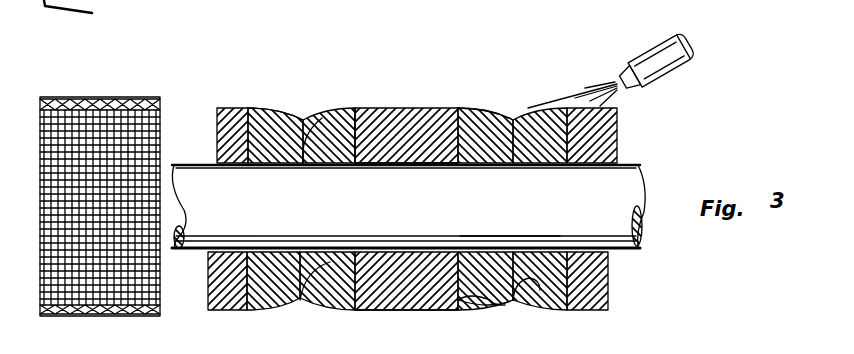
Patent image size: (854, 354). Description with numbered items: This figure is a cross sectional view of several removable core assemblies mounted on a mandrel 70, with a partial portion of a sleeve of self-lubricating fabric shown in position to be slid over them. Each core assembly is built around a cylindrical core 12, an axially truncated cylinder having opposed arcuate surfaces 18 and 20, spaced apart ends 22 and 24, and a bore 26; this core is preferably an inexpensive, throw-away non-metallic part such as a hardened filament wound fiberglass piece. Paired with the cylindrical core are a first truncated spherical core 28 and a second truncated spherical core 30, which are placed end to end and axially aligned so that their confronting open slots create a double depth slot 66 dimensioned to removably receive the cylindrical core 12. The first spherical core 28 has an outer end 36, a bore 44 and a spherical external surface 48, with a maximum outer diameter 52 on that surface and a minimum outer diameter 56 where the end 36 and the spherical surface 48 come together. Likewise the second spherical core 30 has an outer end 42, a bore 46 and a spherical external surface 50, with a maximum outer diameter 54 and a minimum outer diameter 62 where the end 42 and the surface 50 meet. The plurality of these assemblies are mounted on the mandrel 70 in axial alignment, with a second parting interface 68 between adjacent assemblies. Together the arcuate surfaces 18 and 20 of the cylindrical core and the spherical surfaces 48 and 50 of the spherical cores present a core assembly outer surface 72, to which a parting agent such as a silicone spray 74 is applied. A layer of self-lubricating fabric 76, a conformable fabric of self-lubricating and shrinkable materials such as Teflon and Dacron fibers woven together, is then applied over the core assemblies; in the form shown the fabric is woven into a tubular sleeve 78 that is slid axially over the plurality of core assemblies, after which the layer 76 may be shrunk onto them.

The cylindrical core 12 is at (395, 312).
The arcuate surface 18 is at (414, 108).
The arcuate surface 20 is at (432, 310).
The end 22 is at (330, 310).
The end 24 is at (493, 310).
The bore 26 is at (440, 165).
The first truncated spherical core 28 is at (325, 110).
The second truncated spherical core 30 is at (497, 110).
The end 36 is at (278, 165).
The end 42 is at (525, 310).
The bore 44 is at (348, 165).
The bore 46 is at (496, 250).
The spherical external surface 48 is at (343, 110).
The spherical external surface 50 is at (560, 310).
The maximum outer diameter 52 is at (358, 110).
The maximum outer diameter 54 is at (460, 110).
The minimum outer diameter 56 is at (297, 302).
The minimum outer diameter 62 is at (522, 110).
The double depth slot 66 is at (448, 165).
The second parting interface 68 is at (302, 250).
The mandrel 70 is at (598, 232).
The core assembly outer surface 72 is at (415, 312).
The silicone spray 74 is at (618, 75).
The self-lubricating fabric 76 is at (145, 97).
The tubular sleeve 78 is at (112, 316).